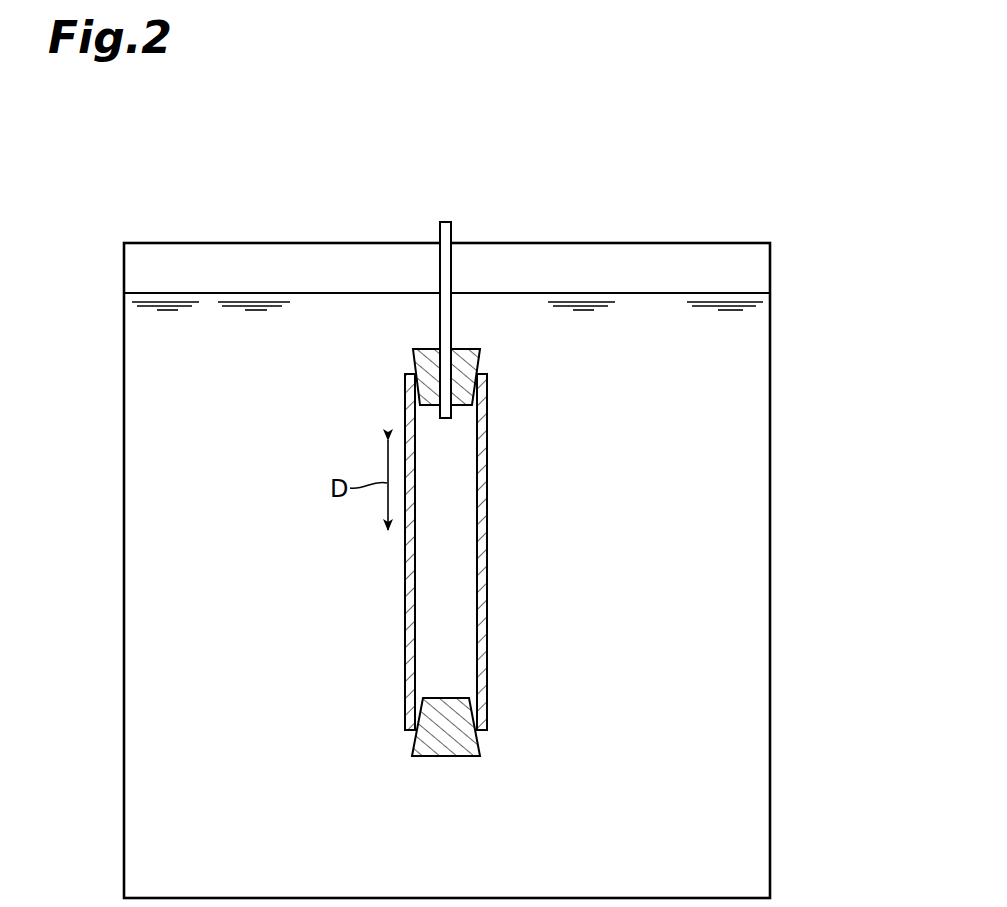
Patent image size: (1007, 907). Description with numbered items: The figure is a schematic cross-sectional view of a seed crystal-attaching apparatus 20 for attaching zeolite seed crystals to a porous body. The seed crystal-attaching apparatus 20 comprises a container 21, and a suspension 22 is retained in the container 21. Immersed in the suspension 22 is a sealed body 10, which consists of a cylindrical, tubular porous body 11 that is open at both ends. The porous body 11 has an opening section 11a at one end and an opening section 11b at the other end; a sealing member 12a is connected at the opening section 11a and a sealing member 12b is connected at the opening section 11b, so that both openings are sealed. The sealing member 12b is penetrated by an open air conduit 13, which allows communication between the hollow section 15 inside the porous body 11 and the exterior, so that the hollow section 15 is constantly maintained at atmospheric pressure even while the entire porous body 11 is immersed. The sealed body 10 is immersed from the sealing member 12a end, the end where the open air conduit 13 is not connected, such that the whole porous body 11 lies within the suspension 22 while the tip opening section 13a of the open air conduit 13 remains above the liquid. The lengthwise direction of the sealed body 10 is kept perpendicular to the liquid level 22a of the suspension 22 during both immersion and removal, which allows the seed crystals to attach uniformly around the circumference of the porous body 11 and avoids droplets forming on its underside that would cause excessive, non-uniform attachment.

The sealed body 10 is at (390, 662).
The porous body 11 is at (483, 513).
The opening section 11a is at (482, 737).
The opening section 11b is at (483, 372).
The sealing member 12a is at (450, 757).
The sealing member 12b is at (475, 352).
The open air conduit 13 is at (438, 228).
The tip opening section 13a is at (452, 213).
The hollow section 15 is at (430, 555).
The seed crystal-attaching apparatus 20 is at (748, 145).
The container 21 is at (772, 505).
The suspension 22 is at (757, 423).
The liquid level 22a is at (732, 293).